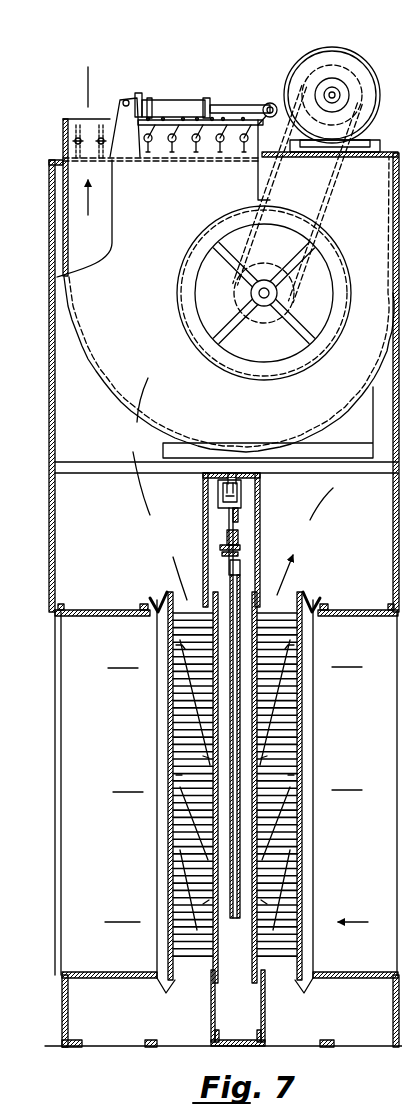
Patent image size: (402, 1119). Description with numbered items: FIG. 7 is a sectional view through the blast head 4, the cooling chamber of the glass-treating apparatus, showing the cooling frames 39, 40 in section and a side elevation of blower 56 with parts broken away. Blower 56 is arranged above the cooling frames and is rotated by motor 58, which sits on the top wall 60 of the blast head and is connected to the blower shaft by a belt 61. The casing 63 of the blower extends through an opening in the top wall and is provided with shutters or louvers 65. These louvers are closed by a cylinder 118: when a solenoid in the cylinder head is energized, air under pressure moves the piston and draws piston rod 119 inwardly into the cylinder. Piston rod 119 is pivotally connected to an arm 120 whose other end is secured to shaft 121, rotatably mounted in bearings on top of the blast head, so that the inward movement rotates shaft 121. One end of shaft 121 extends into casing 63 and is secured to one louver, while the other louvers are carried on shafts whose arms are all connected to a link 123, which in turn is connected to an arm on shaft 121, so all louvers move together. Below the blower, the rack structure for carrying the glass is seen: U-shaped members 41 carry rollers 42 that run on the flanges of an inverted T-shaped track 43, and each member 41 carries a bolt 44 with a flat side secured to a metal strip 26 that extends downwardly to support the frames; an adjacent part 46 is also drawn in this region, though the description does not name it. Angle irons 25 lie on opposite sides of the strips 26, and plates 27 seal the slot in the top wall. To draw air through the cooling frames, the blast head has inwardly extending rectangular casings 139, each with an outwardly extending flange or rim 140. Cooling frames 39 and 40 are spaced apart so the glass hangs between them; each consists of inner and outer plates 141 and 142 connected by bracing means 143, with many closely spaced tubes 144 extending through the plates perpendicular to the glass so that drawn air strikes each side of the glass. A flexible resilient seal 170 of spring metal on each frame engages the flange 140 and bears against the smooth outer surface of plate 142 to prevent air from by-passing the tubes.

The blast head 4 is at (50, 616).
The angle irons 25 is at (227, 540).
The metal strips 26 is at (238, 531).
The plates 27 is at (222, 553).
The cooling frame 39 is at (165, 760).
The cooling frame 40 is at (305, 760).
The U-shaped members 41 is at (206, 500).
The rollers 42 is at (218, 488).
The inverted T-shaped track 43 is at (232, 476).
The bolt 44 is at (235, 525).
The shaft support 46 is at (240, 510).
The blower 56 is at (216, 313).
The motor 58 is at (345, 50).
The top wall 60 is at (338, 158).
The belt 61 is at (330, 190).
The casing 63 is at (62, 128).
The shutters or louvers 65 is at (82, 132).
The cylinder 118 is at (165, 95).
The piston rod 119 is at (220, 100).
The arm 120 is at (270, 103).
The shaft 121 is at (233, 145).
The link 123 is at (228, 122).
The rectangular-shaped casings 139 is at (112, 618).
The flange or rim 140 is at (150, 603).
The inner plate 141 is at (217, 968).
The outer plate 142 is at (173, 830).
The bracing means 143 is at (190, 705).
The tubes 144 is at (288, 813).
The flexible resilient seal 170 is at (160, 595).